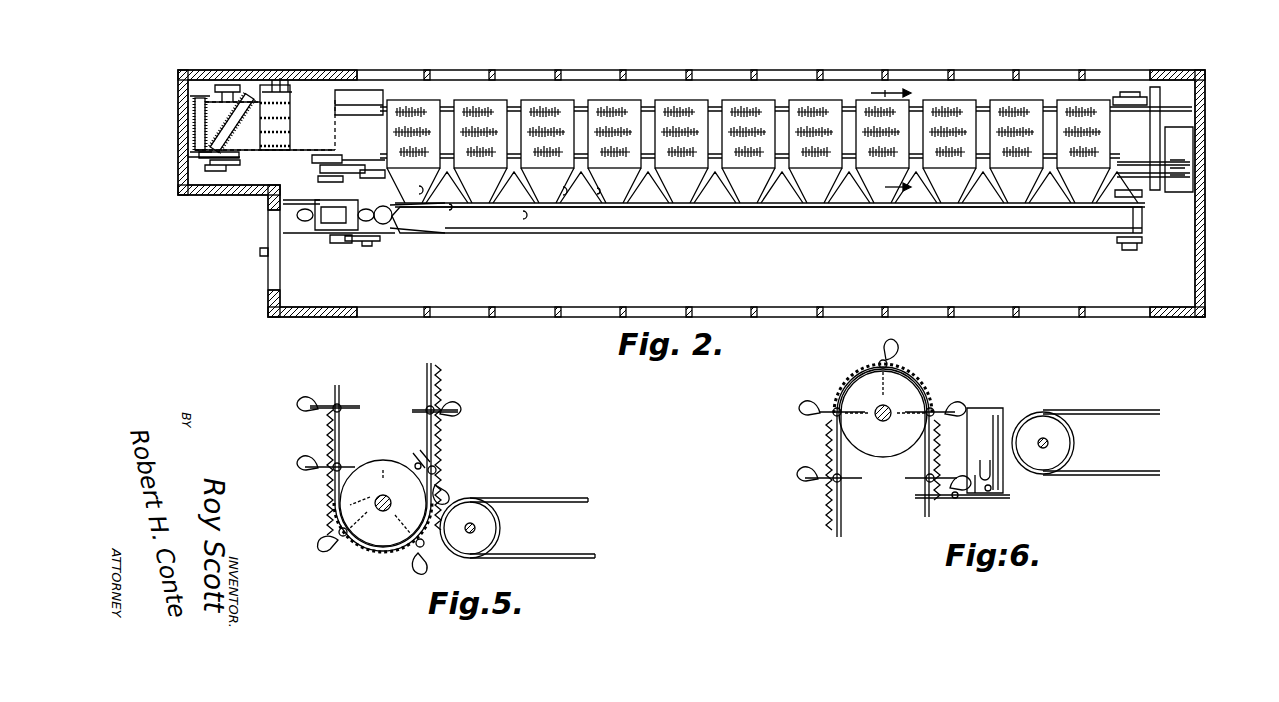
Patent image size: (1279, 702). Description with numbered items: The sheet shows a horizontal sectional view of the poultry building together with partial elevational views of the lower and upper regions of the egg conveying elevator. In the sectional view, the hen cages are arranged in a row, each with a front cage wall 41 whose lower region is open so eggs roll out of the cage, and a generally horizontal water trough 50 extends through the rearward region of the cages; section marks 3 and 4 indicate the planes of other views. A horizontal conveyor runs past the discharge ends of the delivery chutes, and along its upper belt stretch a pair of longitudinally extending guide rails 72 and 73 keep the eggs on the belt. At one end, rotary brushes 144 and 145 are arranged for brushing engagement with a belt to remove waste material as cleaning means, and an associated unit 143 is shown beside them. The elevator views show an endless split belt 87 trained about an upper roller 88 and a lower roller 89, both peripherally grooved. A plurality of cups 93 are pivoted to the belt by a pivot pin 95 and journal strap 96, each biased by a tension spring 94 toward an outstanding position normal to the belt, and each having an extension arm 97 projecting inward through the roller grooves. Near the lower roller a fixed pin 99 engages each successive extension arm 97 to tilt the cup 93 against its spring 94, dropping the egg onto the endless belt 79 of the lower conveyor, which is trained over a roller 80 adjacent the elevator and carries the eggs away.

In FIG. 2, the section line 3- 3 is at (178, 180).
In FIG. 2, the view direction arrow 4 is at (883, 95).
In FIG. 2, the front cage wall 41 is at (888, 183).
In FIG. 2, the water trough 50 is at (646, 100).
In FIG. 2, the guide rail 72 is at (722, 190).
In FIG. 2, the guide rail 73 is at (731, 233).
In FIG. 2, the spring unit 143 is at (292, 92).
In FIG. 2, the rotary brush 144 is at (224, 100).
In FIG. 2, the rotary brush 145 is at (197, 120).
In FIG. 5, the endless belt 79 is at (580, 498).
In FIG. 5, the roller 80 is at (481, 518).
In FIG. 5, the split belt 87 is at (425, 367).
In FIG. 6, the upper roller 88 is at (893, 458).
In FIG. 5, the lower roller 89 is at (355, 495).
In FIG. 5, the cup 93 is at (443, 413).
In FIG. 5, the tension spring 94 is at (441, 384).
In FIG. 5, the pivot pin 95 is at (428, 413).
In FIG. 5, the journal strap 96 is at (428, 407).
In FIG. 5, the extension arm 97 is at (347, 400).
In FIG. 5, the fixed pin 99 is at (420, 462).